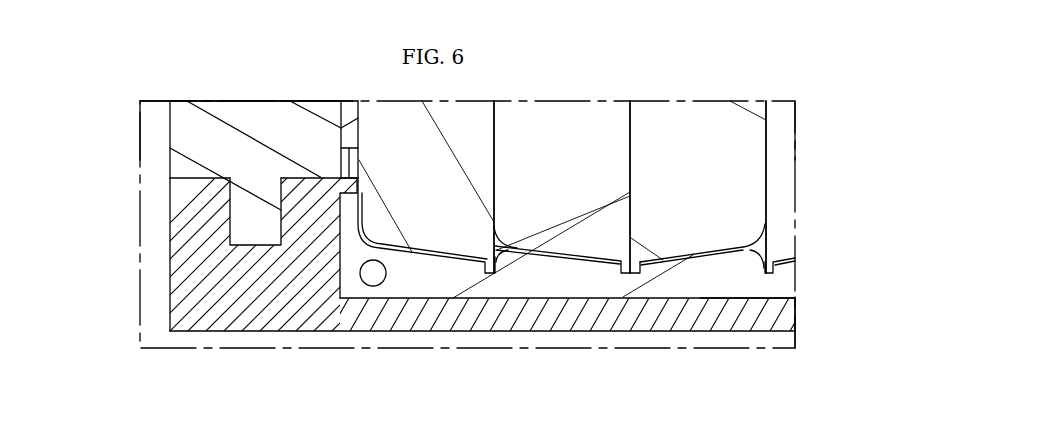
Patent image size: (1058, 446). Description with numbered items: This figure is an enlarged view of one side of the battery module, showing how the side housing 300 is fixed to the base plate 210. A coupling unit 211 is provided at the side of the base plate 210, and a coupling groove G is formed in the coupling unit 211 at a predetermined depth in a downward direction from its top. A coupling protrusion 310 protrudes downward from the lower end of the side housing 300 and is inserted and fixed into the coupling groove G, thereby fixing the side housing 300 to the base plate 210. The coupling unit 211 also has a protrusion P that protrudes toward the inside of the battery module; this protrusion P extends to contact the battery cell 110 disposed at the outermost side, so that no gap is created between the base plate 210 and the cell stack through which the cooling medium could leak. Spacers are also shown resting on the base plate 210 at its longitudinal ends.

The side housing 300 is at (183, 137).
The coupling protrusion 310 is at (250, 207).
The coupling unit 211 is at (185, 272).
The base plate 210 is at (593, 318).
The battery cell 110 is at (443, 233).
The protrusion P is at (345, 195).
The coupling groove G is at (230, 227).